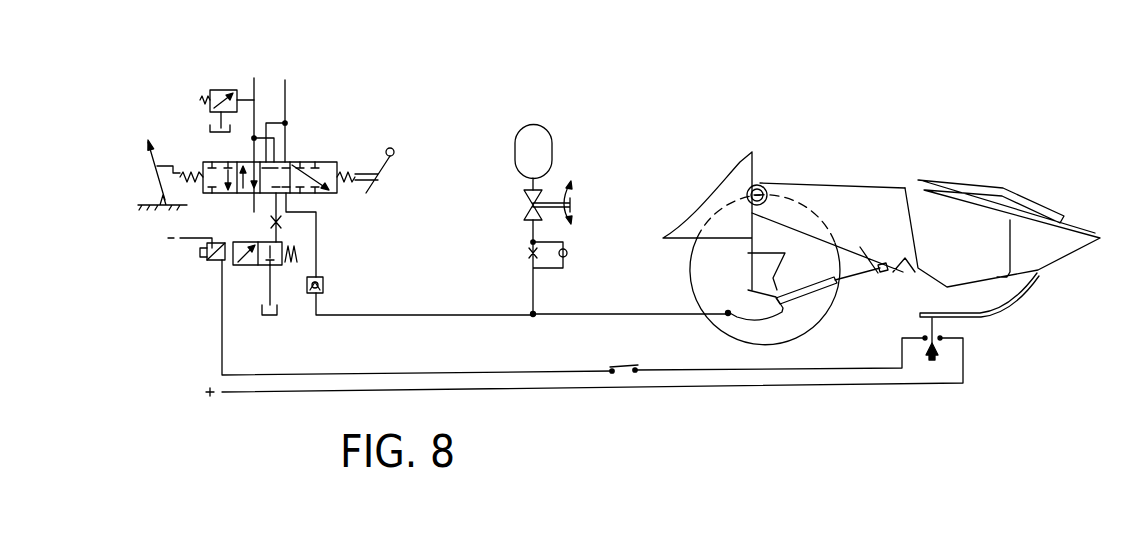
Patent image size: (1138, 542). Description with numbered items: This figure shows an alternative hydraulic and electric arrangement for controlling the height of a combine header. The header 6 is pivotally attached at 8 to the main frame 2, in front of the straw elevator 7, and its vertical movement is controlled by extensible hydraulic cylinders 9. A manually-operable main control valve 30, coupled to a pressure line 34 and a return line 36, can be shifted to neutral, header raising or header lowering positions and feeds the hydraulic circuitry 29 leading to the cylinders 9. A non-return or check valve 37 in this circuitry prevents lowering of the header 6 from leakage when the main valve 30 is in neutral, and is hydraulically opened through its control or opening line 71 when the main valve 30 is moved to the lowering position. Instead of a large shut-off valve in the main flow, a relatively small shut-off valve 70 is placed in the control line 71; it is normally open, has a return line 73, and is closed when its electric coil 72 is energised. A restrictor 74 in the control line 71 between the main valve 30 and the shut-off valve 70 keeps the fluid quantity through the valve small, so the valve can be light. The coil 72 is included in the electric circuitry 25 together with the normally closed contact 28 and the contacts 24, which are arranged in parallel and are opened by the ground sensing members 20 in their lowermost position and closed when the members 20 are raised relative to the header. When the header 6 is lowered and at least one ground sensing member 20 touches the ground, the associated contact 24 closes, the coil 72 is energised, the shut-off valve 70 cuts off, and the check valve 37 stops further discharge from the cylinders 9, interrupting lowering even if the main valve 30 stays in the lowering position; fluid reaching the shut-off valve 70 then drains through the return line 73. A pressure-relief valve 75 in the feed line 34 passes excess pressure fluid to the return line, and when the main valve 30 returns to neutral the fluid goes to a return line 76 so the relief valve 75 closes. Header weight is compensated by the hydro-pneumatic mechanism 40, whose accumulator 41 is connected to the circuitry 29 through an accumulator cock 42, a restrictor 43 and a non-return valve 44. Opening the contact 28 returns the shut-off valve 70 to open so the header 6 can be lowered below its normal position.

The main frame 2 is at (757, 165).
The header 6 is at (1040, 298).
The straw elevator 7 is at (847, 185).
The pivot 8 is at (767, 183).
The hydraulic cylinders 9 is at (823, 293).
The ground sensing members 20 is at (1000, 310).
The electric contacts 24 is at (938, 358).
The electric circuitry 25 is at (725, 385).
The electric contact 28 is at (623, 365).
The hydraulic circuitry 29 is at (587, 312).
The main control valve 30 is at (313, 160).
The pressure line 34 is at (253, 80).
The return line 36 is at (285, 88).
The non-return valve 37 is at (325, 287).
The hydro-pneumatic weight-compensation mechanism 40 is at (561, 199).
The hydro-pneumatic accumulator 41 is at (552, 142).
The accumulator cock 42 is at (570, 205).
The restrictor 43 is at (532, 253).
The non-return valve 44 is at (567, 252).
The shut-off valve 70 is at (242, 247).
The control line 71 is at (297, 297).
The electric coil 72 is at (212, 262).
The return line 73 is at (260, 290).
The restrictor 74 is at (270, 222).
The pressure-relief valve 75 is at (223, 90).
The return line 76 is at (255, 202).